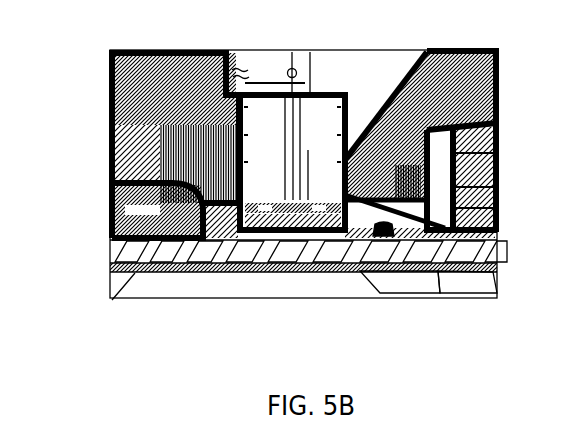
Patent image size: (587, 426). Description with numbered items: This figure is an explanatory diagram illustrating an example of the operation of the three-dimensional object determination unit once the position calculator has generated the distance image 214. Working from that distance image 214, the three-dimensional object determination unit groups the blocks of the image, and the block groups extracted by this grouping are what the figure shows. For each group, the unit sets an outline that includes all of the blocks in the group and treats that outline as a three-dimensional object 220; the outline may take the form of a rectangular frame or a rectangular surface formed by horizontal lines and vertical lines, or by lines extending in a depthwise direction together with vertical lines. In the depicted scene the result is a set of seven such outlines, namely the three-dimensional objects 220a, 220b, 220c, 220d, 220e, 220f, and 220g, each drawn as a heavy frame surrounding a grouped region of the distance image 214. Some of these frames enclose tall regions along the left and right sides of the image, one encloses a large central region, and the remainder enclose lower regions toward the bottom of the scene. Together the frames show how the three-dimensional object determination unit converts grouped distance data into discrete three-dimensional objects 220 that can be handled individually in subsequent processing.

The distance image 214 is at (416, 37).
The three-dimensional object 220 is at (306, 210).
The three-dimensional object 220a is at (108, 122).
The three-dimensional object 220b is at (118, 262).
The three-dimensional object 220c is at (183, 268).
The three-dimensional object 220d is at (290, 270).
The three-dimensional object 220e is at (440, 290).
The three-dimensional object 220f is at (486, 282).
The three-dimensional object 220g is at (498, 100).